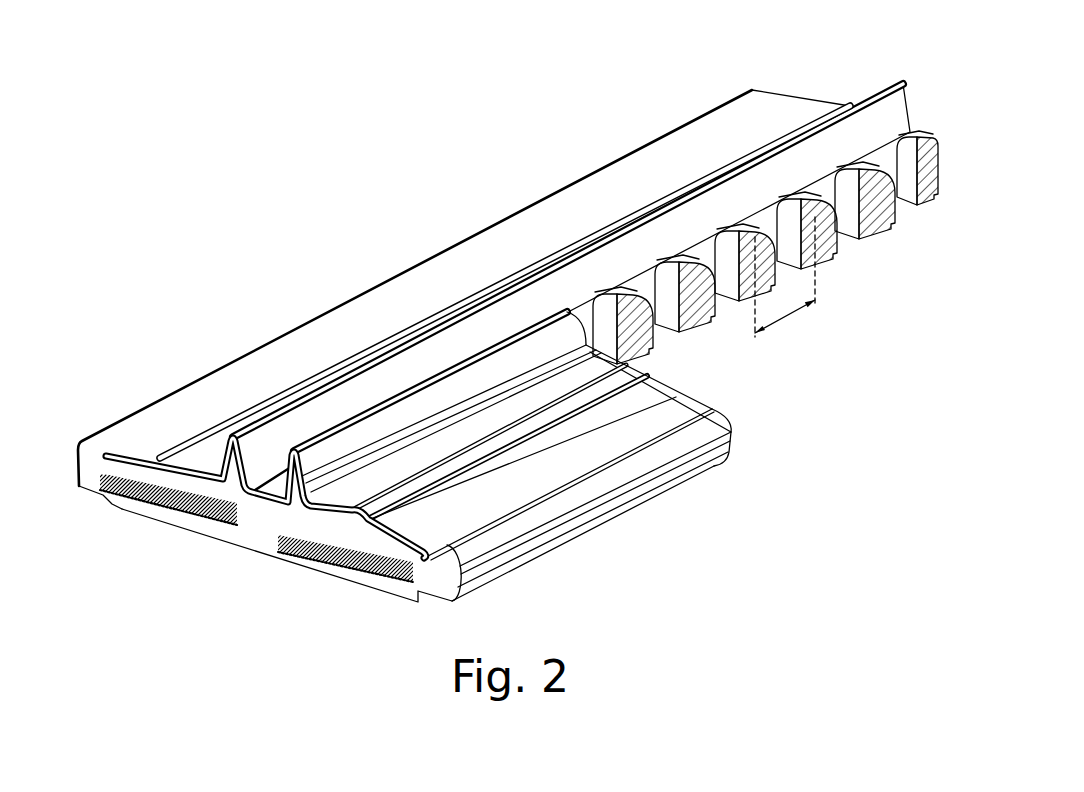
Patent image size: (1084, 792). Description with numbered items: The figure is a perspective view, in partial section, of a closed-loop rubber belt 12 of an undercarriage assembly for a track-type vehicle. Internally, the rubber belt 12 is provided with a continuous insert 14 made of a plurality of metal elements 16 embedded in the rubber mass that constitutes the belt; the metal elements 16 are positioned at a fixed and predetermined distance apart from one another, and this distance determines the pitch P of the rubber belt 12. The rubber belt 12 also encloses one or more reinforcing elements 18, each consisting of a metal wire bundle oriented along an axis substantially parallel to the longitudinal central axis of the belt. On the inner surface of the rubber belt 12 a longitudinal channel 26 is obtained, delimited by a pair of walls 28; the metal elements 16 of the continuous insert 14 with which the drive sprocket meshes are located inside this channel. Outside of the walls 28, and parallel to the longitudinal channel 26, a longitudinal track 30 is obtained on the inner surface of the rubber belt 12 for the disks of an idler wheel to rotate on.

The rubber belt 12 is at (445, 246).
The continuous insert 14 is at (252, 515).
The metal elements 16 is at (878, 222).
The reinforcing elements 18 is at (157, 509).
The longitudinal channel 26 is at (277, 481).
The walls 28 is at (267, 441).
The longitudinal track 30 is at (213, 448).
The pitch P is at (785, 284).